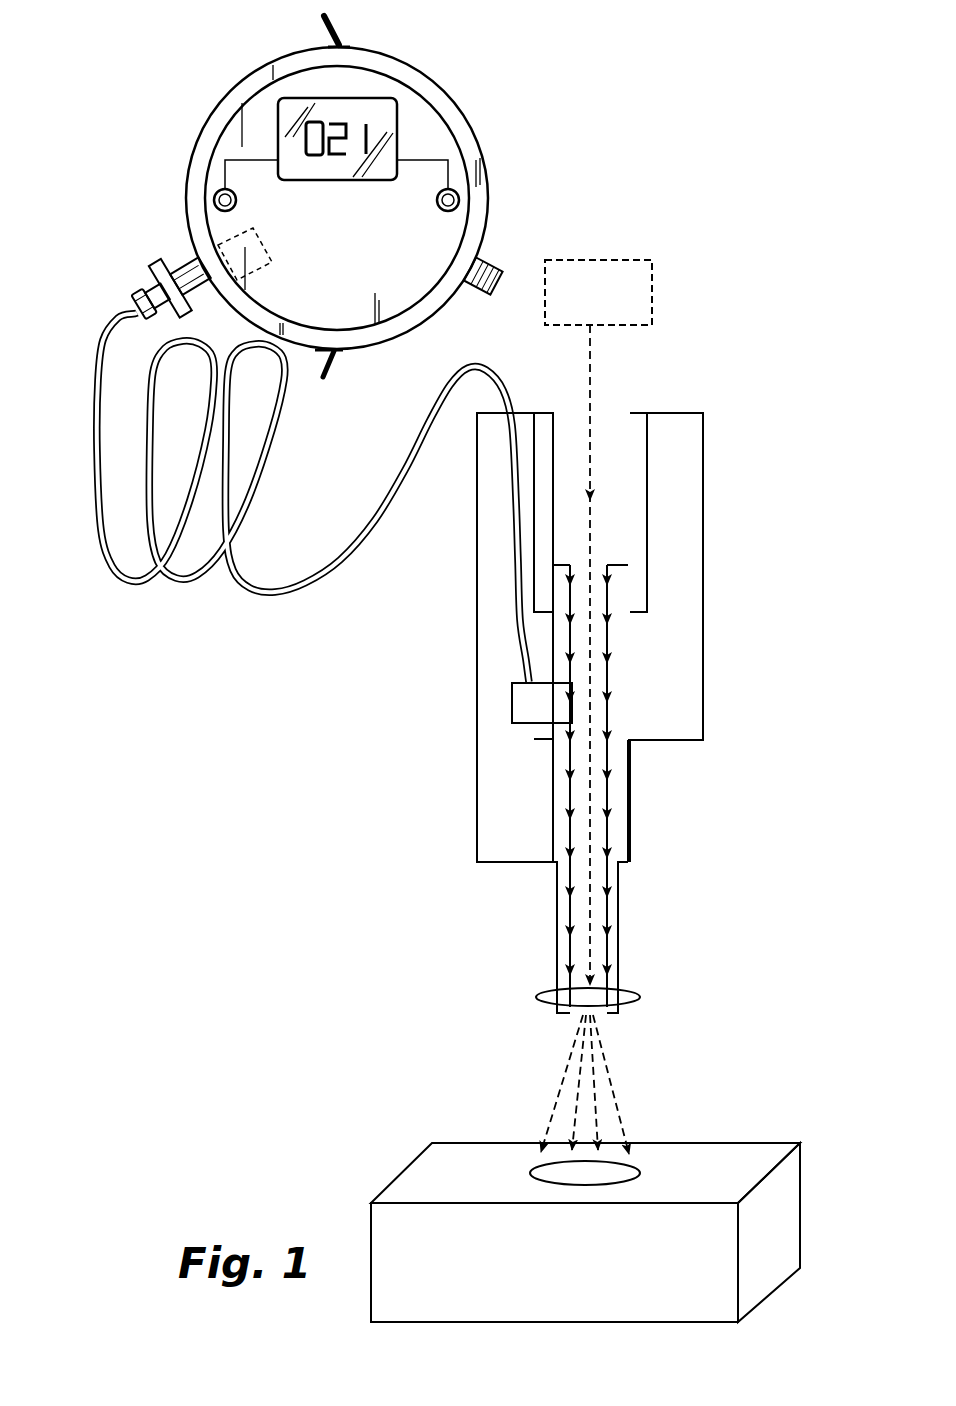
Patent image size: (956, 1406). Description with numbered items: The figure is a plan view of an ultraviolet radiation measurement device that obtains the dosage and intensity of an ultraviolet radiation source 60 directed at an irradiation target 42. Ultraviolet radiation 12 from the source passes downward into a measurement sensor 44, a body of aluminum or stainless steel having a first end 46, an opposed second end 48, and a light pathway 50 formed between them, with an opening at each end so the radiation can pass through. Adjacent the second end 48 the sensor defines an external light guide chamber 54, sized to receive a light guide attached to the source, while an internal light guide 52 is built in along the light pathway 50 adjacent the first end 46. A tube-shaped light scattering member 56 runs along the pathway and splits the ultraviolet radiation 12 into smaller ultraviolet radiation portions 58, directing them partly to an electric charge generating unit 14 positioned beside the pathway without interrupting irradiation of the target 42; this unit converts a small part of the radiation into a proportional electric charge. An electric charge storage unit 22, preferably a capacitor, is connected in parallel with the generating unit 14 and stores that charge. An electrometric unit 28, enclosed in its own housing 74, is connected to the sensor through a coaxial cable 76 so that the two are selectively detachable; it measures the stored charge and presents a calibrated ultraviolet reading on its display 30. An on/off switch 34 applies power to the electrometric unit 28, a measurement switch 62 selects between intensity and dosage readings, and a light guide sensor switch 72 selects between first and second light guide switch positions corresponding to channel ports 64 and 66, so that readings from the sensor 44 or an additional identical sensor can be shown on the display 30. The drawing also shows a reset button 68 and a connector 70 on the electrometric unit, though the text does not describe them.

The ultraviolet radiation 12 is at (596, 343).
The electric charge generating unit 14 is at (511, 693).
The electric charge storage unit 22 is at (220, 238).
The electrometric unit 28 is at (327, 222).
The display 30 is at (368, 98).
The on/off switch 34 is at (328, 30).
The irradiation target 42 is at (519, 1167).
The measurement sensor 44 is at (646, 602).
The first end 46 is at (651, 992).
The second end 48 is at (718, 416).
The light pathway 50 is at (599, 805).
The internal light guide 52 is at (605, 645).
The external light guide chamber 54 is at (618, 413).
The light scattering member 56 is at (568, 764).
The ultraviolet radiation portions 58 is at (569, 887).
The ultraviolet radiation source 60 is at (623, 258).
The measurement switch 62 is at (217, 193).
The channel port 64 is at (190, 260).
The channel port 66 is at (488, 262).
The reset button 68 is at (457, 191).
The connector nut 70 is at (155, 262).
The light guide sensor switch 72 is at (337, 380).
The housing 74 is at (202, 93).
The coaxial cable 76 is at (298, 601).